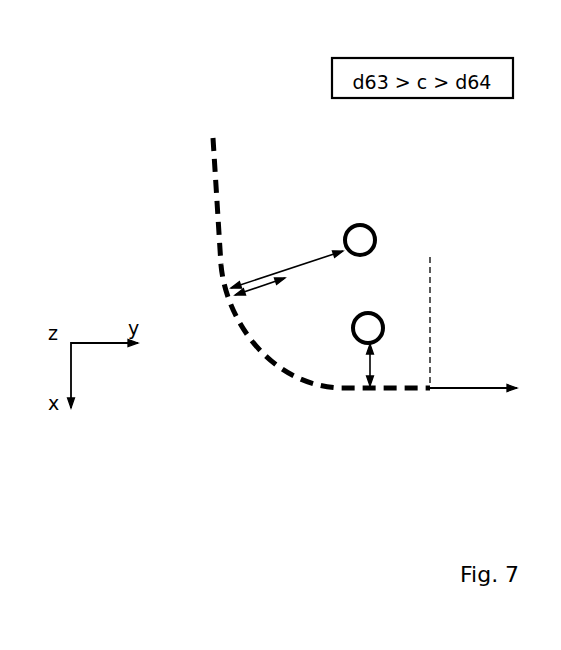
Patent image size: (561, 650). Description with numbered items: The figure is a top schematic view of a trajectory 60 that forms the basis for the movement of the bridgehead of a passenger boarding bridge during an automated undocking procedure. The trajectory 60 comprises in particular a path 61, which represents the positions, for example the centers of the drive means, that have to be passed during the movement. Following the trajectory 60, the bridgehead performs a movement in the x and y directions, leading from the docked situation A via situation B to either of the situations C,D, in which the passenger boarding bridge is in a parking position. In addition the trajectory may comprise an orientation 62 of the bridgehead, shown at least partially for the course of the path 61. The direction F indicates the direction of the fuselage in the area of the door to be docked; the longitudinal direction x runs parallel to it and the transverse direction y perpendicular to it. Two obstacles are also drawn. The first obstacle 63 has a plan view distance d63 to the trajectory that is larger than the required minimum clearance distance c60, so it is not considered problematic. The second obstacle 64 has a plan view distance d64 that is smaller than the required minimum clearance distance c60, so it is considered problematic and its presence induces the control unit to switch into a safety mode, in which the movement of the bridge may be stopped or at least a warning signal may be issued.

The trajectory 60 is at (100, 108).
The path 61 is at (255, 348).
The orientation 62 is at (493, 385).
The first obstacle 63 is at (367, 227).
The second obstacle 64 is at (374, 315).
The plan view distance of first obstacle d63 is at (312, 260).
The plan view distance of second obstacle d64 is at (368, 365).
The required minimum clearance distance c60 is at (267, 285).
The direction of the fuselage F is at (430, 265).
The docked situation A is at (428, 392).
The intermediate situation B is at (368, 392).
The parking position situations C,D is at (213, 138).